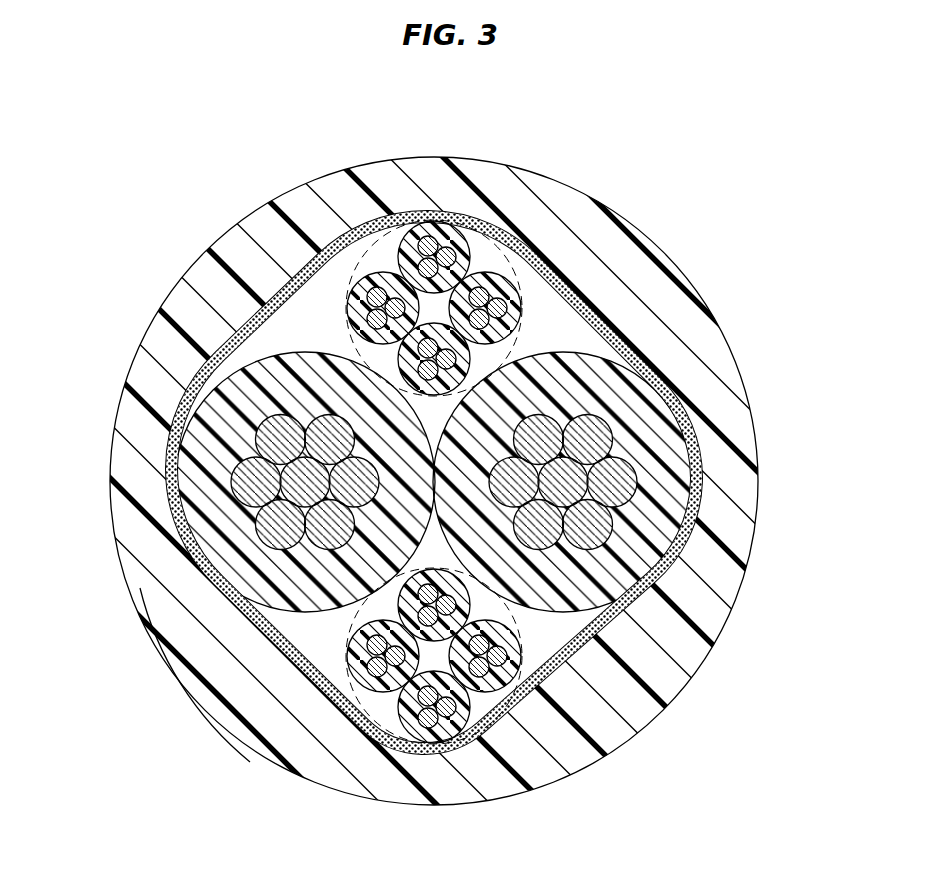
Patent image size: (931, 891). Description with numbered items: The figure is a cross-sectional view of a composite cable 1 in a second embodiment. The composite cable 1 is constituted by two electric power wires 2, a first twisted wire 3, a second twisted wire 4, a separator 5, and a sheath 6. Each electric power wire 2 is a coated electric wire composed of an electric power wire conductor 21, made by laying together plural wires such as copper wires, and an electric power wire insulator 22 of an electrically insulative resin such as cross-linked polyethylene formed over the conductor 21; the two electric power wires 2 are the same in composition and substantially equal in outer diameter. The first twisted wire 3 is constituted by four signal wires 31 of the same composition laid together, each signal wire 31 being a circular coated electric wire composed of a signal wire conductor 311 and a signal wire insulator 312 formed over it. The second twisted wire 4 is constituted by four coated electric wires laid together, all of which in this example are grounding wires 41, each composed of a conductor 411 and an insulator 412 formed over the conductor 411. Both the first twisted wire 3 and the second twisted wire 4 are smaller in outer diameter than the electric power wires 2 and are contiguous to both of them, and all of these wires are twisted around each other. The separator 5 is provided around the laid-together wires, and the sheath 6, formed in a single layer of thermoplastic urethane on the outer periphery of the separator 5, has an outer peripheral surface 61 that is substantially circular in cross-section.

The composite cable 1 is at (434, 451).
The electric power wire 2 is at (437, 482).
The electric power wire conductor 21 is at (437, 482).
The electric power wire insulator 22 is at (437, 482).
The first twisted wire 3 is at (468, 716).
The signal wire 31 is at (396, 717).
The signal wire conductor 311 is at (405, 716).
The signal wire insulator 312 is at (434, 717).
The second twisted wire 4 is at (449, 250).
The grounding wire 41 is at (397, 250).
The conductor 411 is at (407, 250).
The insulator 412 is at (434, 250).
The separator 5 is at (455, 483).
The sheath 6 is at (427, 481).
The outer peripheral surface 61 is at (194, 675).